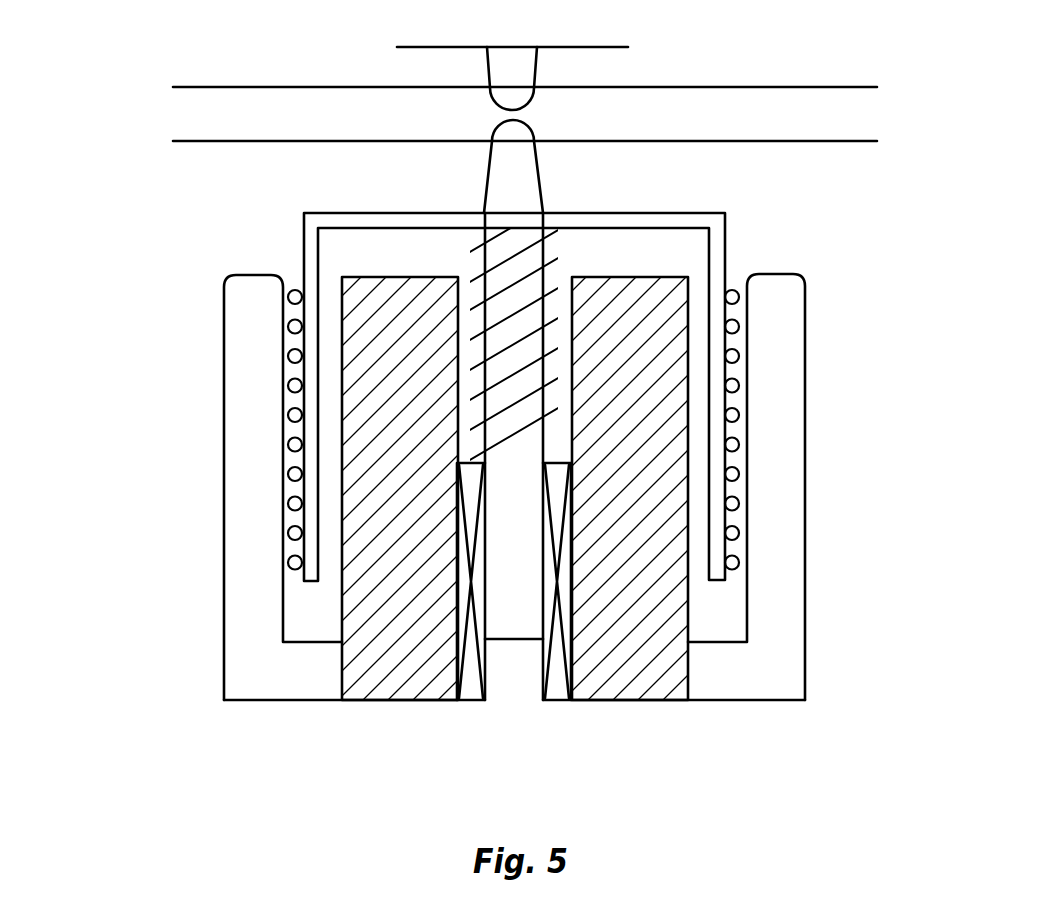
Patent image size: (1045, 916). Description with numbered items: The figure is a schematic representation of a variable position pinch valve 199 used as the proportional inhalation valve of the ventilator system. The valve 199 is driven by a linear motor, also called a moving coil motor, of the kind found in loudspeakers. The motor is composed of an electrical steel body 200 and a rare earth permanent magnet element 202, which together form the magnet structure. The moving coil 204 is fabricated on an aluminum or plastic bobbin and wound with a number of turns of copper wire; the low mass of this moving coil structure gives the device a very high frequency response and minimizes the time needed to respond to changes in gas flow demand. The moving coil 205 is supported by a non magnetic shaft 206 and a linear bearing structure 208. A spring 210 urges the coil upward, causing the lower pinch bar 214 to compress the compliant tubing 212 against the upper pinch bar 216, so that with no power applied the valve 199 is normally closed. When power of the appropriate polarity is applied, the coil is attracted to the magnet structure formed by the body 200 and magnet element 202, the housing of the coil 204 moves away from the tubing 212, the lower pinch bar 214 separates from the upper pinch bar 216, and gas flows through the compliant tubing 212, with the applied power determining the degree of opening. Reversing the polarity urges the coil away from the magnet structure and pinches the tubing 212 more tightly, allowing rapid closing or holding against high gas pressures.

The variable position pinch valve 199 is at (176, 490).
The electrical steel body 200 is at (255, 665).
The rare earth permanent magnet element 202 is at (392, 687).
The moving coil 204 is at (313, 265).
The moving coil 205 is at (740, 502).
The non magnetic shaft 206 is at (517, 412).
The linear bearing structure 208 is at (553, 695).
The spring 210 is at (547, 247).
The compliant tubing 212 is at (767, 87).
The lower pinch bar 214 is at (545, 176).
The upper pinch bar 216 is at (485, 65).